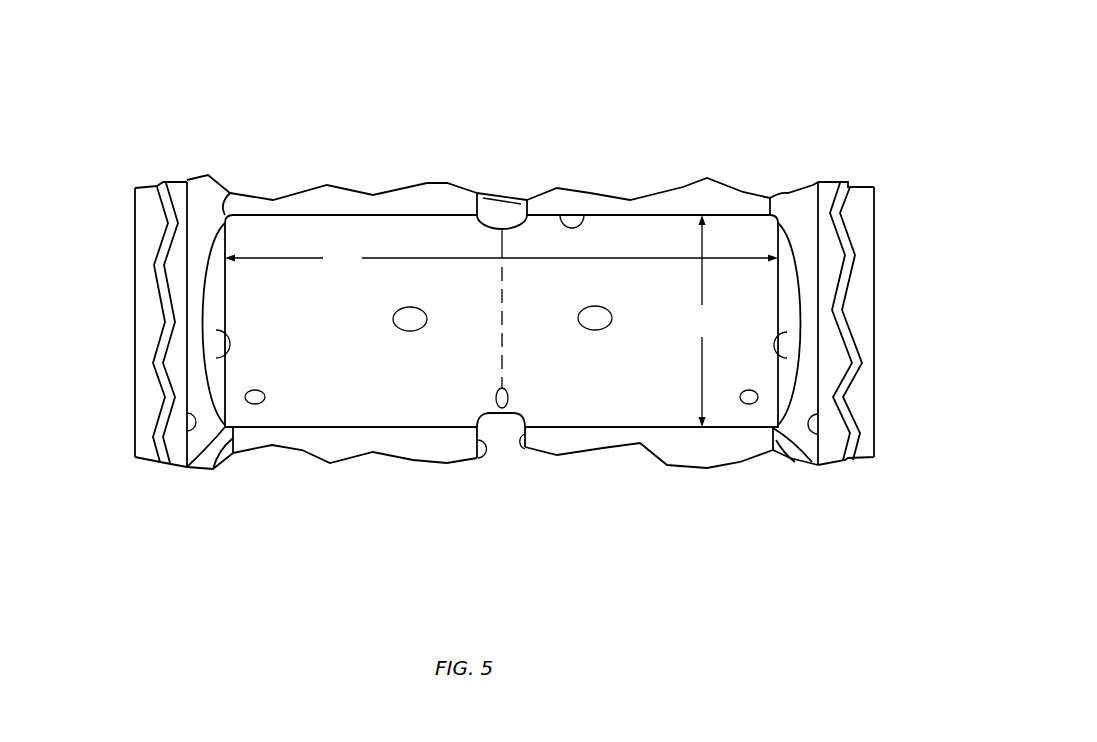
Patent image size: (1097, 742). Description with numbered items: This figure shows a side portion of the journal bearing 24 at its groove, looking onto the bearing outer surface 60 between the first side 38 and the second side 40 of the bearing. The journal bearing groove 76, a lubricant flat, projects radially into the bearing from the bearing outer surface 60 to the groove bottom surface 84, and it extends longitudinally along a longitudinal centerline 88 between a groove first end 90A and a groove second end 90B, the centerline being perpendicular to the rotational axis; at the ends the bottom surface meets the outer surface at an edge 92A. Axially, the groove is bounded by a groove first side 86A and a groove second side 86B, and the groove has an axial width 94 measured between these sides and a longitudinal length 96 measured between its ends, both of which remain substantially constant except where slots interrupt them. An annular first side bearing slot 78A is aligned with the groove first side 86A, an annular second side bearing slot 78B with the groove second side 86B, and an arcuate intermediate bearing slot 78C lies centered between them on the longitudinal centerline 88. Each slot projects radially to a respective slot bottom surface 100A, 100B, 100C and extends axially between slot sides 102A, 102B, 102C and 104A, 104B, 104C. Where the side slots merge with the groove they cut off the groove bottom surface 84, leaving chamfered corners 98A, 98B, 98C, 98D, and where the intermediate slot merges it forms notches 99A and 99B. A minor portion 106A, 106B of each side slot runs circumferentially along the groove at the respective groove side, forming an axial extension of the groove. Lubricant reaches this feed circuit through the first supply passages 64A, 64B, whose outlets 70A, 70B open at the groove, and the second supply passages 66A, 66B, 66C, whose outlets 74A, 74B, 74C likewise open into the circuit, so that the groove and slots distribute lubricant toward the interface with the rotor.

The journal bearing 24 is at (840, 86).
The first side 38 is at (135, 212).
The second side 40 is at (874, 215).
The bearing outer surface 60 is at (707, 178).
The first supply passage 64A is at (440, 342).
The first supply passage 64B is at (630, 299).
The second supply passage 66A is at (292, 368).
The second supply passage 66B is at (728, 449).
The second supply passage 66C is at (574, 448).
The outlet 70A is at (426, 315).
The outlet 70B is at (595, 318).
The outlet 74A is at (265, 396).
The outlet 74B is at (750, 404).
The outlet 74C is at (508, 398).
The journal bearing groove 76 is at (644, 232).
The first side bearing slot 78A is at (202, 212).
The second side bearing slot 78B is at (803, 212).
The intermediate bearing slot 78C is at (505, 211).
The groove bottom surface 84 is at (328, 222).
The groove first side 86A is at (215, 357).
The groove second side 86B is at (787, 358).
The longitudinal centerline 88 is at (502, 303).
The groove first end 90A is at (582, 184).
The groove second end 90B is at (610, 394).
The edge 92A is at (580, 215).
The axial width 94 is at (501, 260).
The longitudinal length 96 is at (702, 321).
The chamfered corner 98A is at (222, 195).
The chamfered corner 98B is at (781, 196).
The chamfered corner 98C is at (190, 467).
The chamfered corner 98D is at (810, 458).
The notch 99A is at (485, 225).
The notch 99B is at (483, 418).
The slot bottom surface 100A is at (200, 232).
The slot bottom surface 100B is at (802, 233).
The slot bottom surface 100C is at (495, 204).
The slot side 102A is at (186, 428).
The slot side 102B is at (787, 462).
The slot side 102C is at (487, 462).
The slot side 104A is at (213, 469).
The slot side 104B is at (817, 437).
The slot side 104C is at (513, 448).
The minor portion 106A is at (180, 299).
The minor portion 106B is at (826, 299).